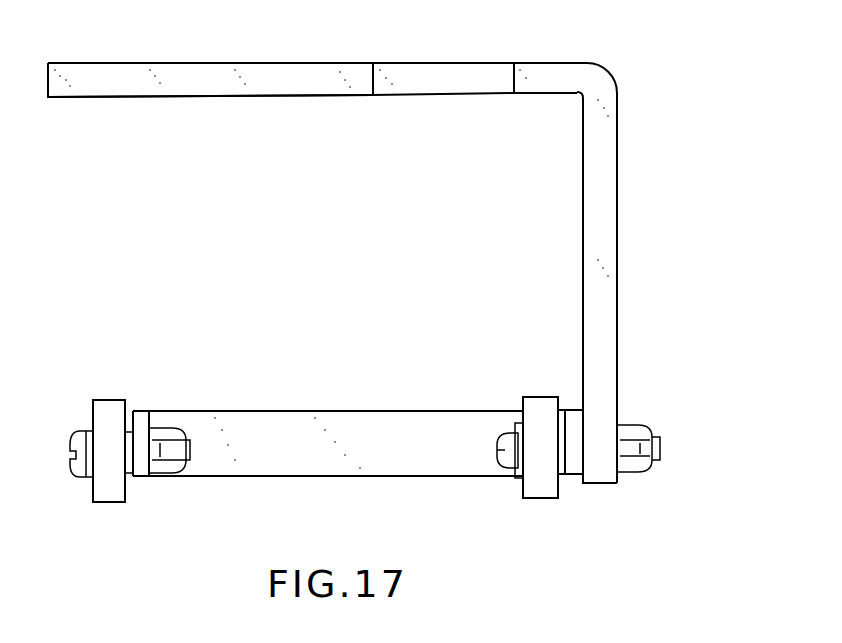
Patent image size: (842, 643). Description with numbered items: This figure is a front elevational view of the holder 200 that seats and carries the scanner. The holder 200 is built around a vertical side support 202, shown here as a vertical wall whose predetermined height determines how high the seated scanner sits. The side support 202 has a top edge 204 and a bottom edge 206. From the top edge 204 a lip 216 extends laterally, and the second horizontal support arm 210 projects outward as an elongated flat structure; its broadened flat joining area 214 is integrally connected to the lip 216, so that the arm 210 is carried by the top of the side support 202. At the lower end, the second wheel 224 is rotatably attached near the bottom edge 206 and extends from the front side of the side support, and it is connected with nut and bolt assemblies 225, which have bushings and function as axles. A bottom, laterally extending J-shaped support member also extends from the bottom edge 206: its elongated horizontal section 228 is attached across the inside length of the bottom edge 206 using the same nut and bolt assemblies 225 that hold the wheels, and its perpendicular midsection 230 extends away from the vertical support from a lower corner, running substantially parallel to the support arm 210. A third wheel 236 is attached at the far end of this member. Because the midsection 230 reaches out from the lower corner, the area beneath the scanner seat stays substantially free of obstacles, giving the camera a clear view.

The holder 200 is at (633, 98).
The vertical side support 202 is at (601, 210).
The top edge 204 is at (590, 64).
The bottom edge 206 is at (603, 469).
The second horizontal support arm 210 is at (328, 38).
The broadened flat joining area 214 is at (505, 40).
The lip 216 is at (546, 79).
The second wheel 224 is at (524, 497).
The nut and bolt assemblies 225 is at (157, 476).
The elongated horizontal section 228 is at (582, 432).
The perpendicular midsection 230 is at (278, 421).
The third wheel 236 is at (115, 465).